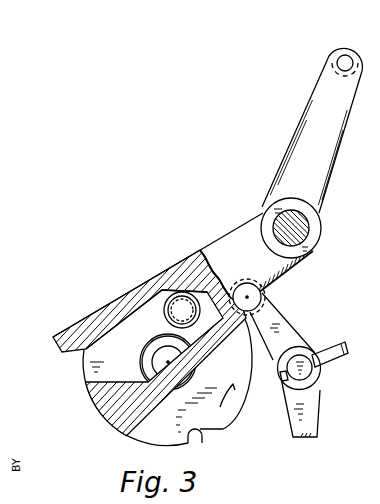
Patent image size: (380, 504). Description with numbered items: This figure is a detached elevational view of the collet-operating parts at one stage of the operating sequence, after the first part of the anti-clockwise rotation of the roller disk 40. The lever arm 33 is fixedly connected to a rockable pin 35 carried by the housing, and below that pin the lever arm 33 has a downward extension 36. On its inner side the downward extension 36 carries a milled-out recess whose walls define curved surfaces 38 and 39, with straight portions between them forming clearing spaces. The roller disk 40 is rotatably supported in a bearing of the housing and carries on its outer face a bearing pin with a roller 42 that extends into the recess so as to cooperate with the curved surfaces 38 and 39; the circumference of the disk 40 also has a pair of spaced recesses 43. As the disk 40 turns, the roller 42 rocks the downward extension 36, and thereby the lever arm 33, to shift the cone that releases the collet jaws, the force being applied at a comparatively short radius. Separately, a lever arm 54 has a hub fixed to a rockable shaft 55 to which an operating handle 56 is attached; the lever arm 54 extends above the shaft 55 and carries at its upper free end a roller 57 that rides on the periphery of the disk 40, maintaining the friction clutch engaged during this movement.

The lever arm 33 is at (323, 147).
The rockable pin 35 is at (310, 224).
The downward extension 36 is at (223, 236).
The curved surface 38 is at (107, 324).
The curved surface 39 is at (140, 382).
The roller disk 40 is at (230, 414).
The roller 42 is at (164, 308).
The recess 43 is at (202, 443).
The lever arm 54 is at (319, 418).
The rockable shaft 55 is at (300, 356).
The operating handle 56 is at (338, 347).
The roller 57 is at (262, 305).